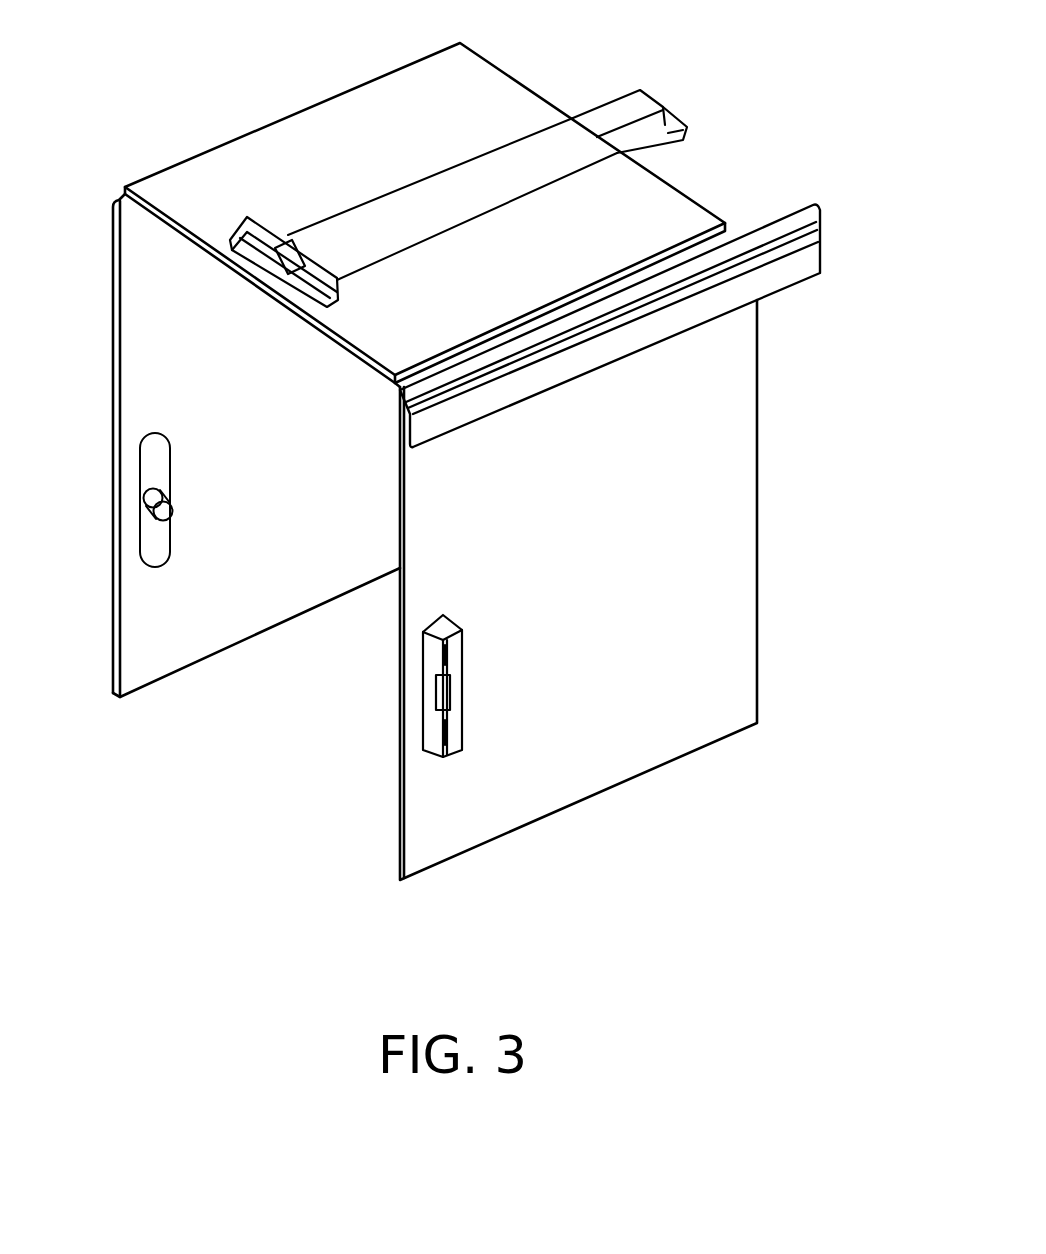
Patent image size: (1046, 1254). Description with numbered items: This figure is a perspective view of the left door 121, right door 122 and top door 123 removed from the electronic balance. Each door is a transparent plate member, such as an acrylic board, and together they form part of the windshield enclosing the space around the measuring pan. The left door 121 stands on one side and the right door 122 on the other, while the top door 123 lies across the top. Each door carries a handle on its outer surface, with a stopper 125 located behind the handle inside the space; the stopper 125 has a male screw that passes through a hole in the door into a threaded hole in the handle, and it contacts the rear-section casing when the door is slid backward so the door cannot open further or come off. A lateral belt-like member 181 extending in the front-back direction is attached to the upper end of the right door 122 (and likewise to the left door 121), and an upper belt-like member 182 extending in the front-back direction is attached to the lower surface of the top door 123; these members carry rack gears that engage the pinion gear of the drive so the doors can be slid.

The left door 121 is at (162, 347).
The right door 122 is at (610, 697).
The top door 123 is at (265, 168).
The stopper 125 is at (140, 502).
The lateral belt-like member 181 is at (810, 230).
The upper belt-like member 182 is at (623, 117).